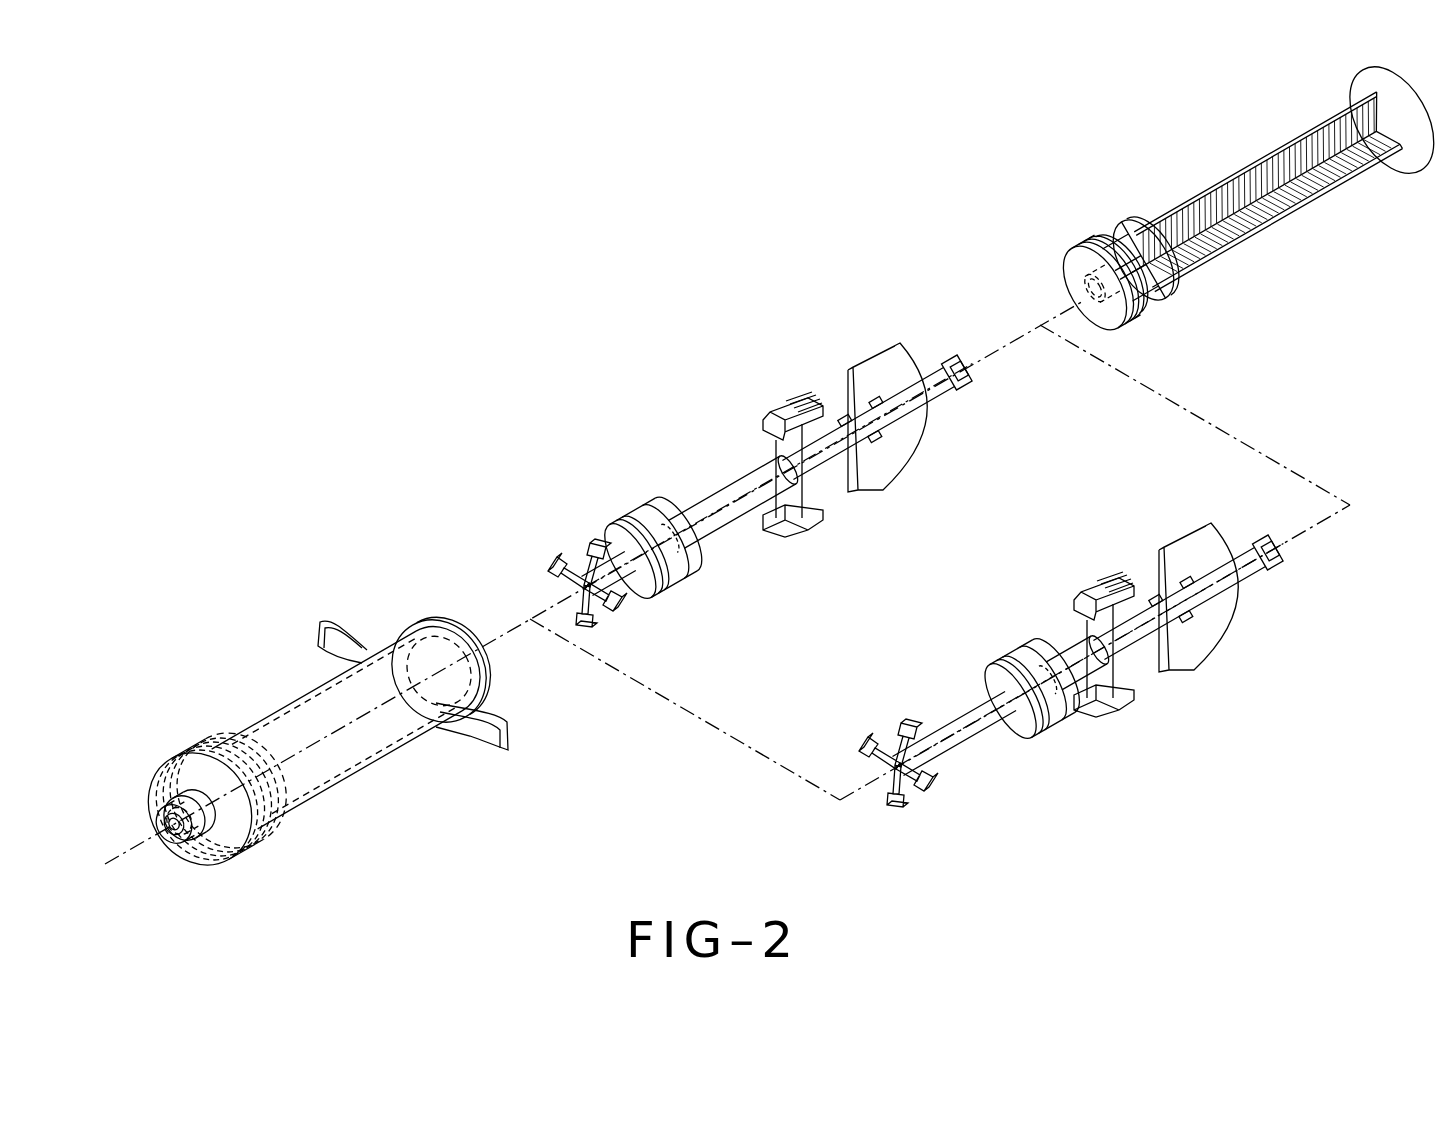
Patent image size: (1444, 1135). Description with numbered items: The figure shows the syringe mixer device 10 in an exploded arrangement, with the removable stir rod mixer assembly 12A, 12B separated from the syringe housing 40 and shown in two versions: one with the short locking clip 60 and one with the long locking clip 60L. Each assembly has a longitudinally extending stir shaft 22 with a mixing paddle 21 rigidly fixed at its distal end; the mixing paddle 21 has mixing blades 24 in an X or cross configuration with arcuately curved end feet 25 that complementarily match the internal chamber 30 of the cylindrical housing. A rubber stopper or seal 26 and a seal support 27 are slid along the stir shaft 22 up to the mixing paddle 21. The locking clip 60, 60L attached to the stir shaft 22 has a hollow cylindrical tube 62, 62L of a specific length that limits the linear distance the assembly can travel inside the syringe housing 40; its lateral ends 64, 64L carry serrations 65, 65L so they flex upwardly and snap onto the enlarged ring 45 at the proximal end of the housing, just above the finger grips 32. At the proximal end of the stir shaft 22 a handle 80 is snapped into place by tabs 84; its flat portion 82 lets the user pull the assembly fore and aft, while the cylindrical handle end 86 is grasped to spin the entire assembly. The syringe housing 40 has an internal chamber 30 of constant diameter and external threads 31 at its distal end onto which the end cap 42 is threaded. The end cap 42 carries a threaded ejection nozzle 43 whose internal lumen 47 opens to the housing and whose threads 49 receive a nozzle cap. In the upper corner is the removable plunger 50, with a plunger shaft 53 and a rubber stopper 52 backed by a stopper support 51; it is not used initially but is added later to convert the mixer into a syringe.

The syringe mixer device 10 is at (362, 264).
The stir rod mixer assembly 12A is at (1103, 662).
The stir rod mixer assembly 12B is at (779, 445).
The mixing paddle 21 is at (773, 677).
The stir shaft 22 is at (630, 583).
The mixing blades 24 is at (575, 572).
The end feet 25 is at (615, 606).
The seal 26 is at (610, 527).
The seal support 27 is at (667, 507).
The internal chamber 30 is at (360, 782).
The external threads 31 is at (258, 835).
The finger grips 32 is at (322, 628).
The syringe housing 40 is at (198, 772).
The end cap 42 is at (178, 753).
The nozzle 43 is at (150, 816).
The ring 45 is at (433, 625).
The lumen 47 is at (163, 842).
The threads 49 is at (197, 828).
The removable plunger 50 is at (1237, 202).
The stopper support 51 is at (1144, 260).
The stopper 52 is at (1105, 281).
The plunger shaft 53 is at (1261, 194).
The short locking clip 60 is at (1097, 662).
The long locking clip 60L is at (750, 479).
The hollow cylindrical tube 62 is at (1108, 682).
The hollow cylindrical tube 62L is at (734, 473).
The lateral ends 64 is at (1092, 561).
The lateral ends 64L is at (785, 414).
The serrations 65 is at (1123, 554).
The serrations 65L is at (804, 398).
The handle 80 is at (1067, 478).
The flat portion 82 is at (905, 370).
The tabs 84 is at (880, 440).
The handle end 86 is at (958, 384).